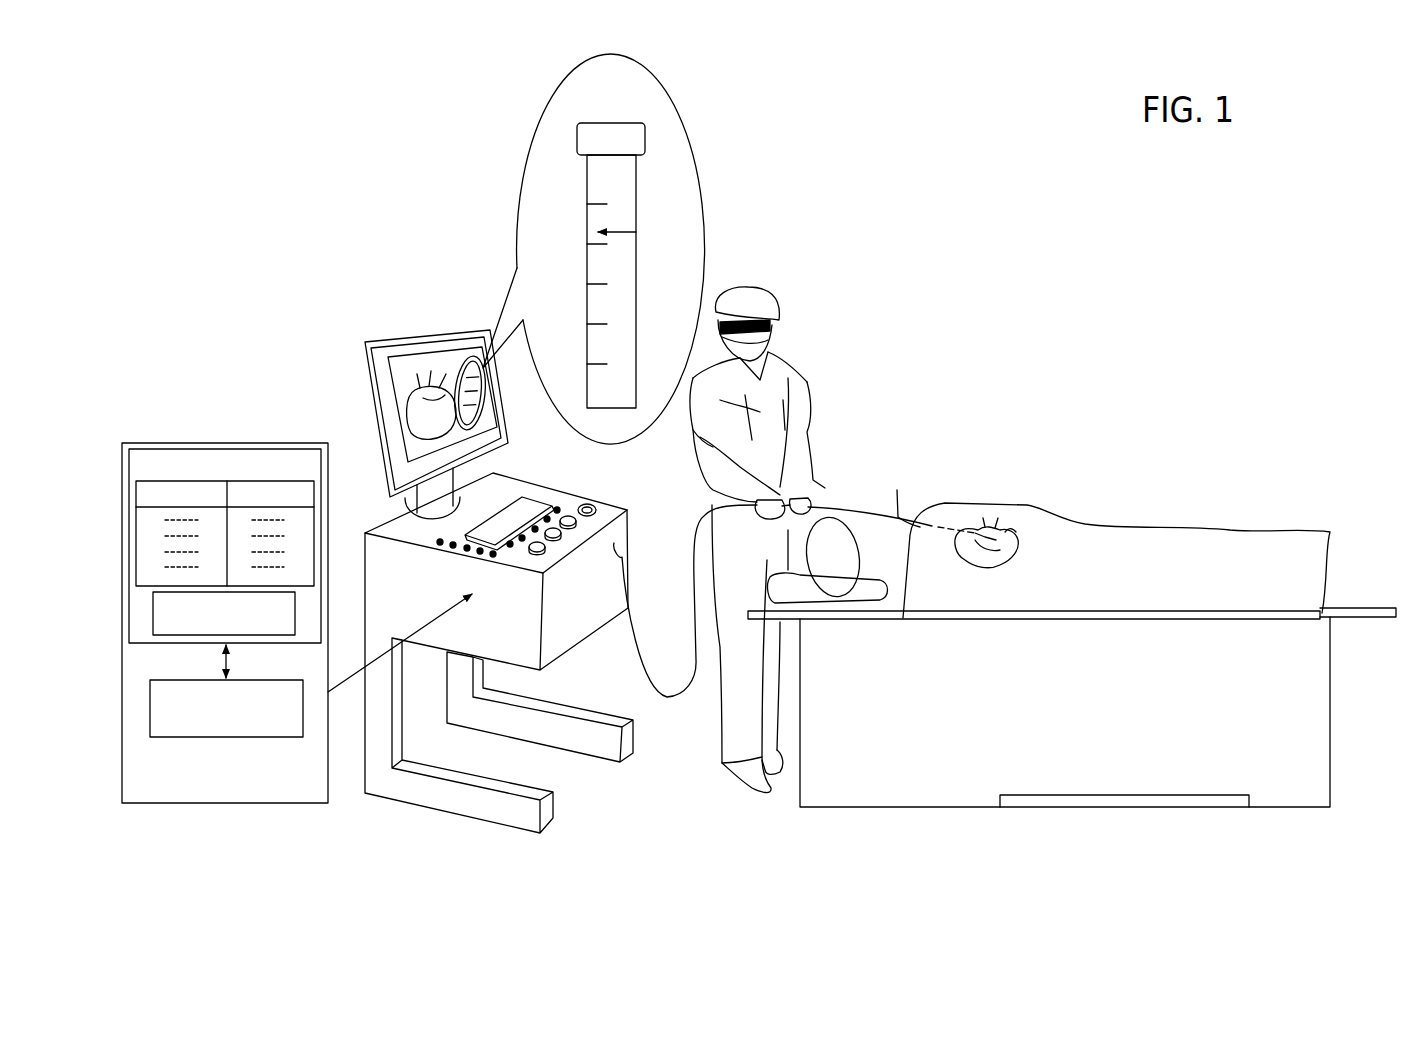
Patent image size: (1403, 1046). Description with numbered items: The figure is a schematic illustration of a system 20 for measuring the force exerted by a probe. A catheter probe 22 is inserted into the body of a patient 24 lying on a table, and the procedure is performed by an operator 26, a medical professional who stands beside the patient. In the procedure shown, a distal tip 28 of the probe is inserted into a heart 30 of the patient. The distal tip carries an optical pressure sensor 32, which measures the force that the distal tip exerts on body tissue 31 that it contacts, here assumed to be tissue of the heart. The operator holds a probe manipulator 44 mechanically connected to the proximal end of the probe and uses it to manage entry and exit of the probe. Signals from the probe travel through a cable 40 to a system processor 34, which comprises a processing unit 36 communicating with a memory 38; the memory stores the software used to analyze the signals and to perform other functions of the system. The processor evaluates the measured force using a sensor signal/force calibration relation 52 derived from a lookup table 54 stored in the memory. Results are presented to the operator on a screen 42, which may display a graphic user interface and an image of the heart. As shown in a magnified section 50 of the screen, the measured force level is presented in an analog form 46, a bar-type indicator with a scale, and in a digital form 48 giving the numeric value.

The system 20 is at (272, 218).
The catheter probe 22 is at (897, 513).
The patient 24 is at (820, 585).
The operator 26 is at (778, 412).
The distal tip 28 is at (1022, 535).
The heart 30 is at (995, 533).
The body tissue 31 is at (1055, 492).
The optical pressure sensor 32 is at (1040, 455).
The system processor 34 is at (234, 443).
The processing unit 36 is at (286, 680).
The memory 38 is at (208, 449).
The cable 40 is at (697, 528).
The screen 42 is at (468, 331).
The probe manipulator 44 is at (807, 503).
The analog form 46 is at (595, 284).
The digital form 48 is at (611, 139).
The magnified section 50 is at (645, 138).
The sensor signal/force calibration relation 52 is at (295, 599).
The lookup table 54 is at (290, 482).